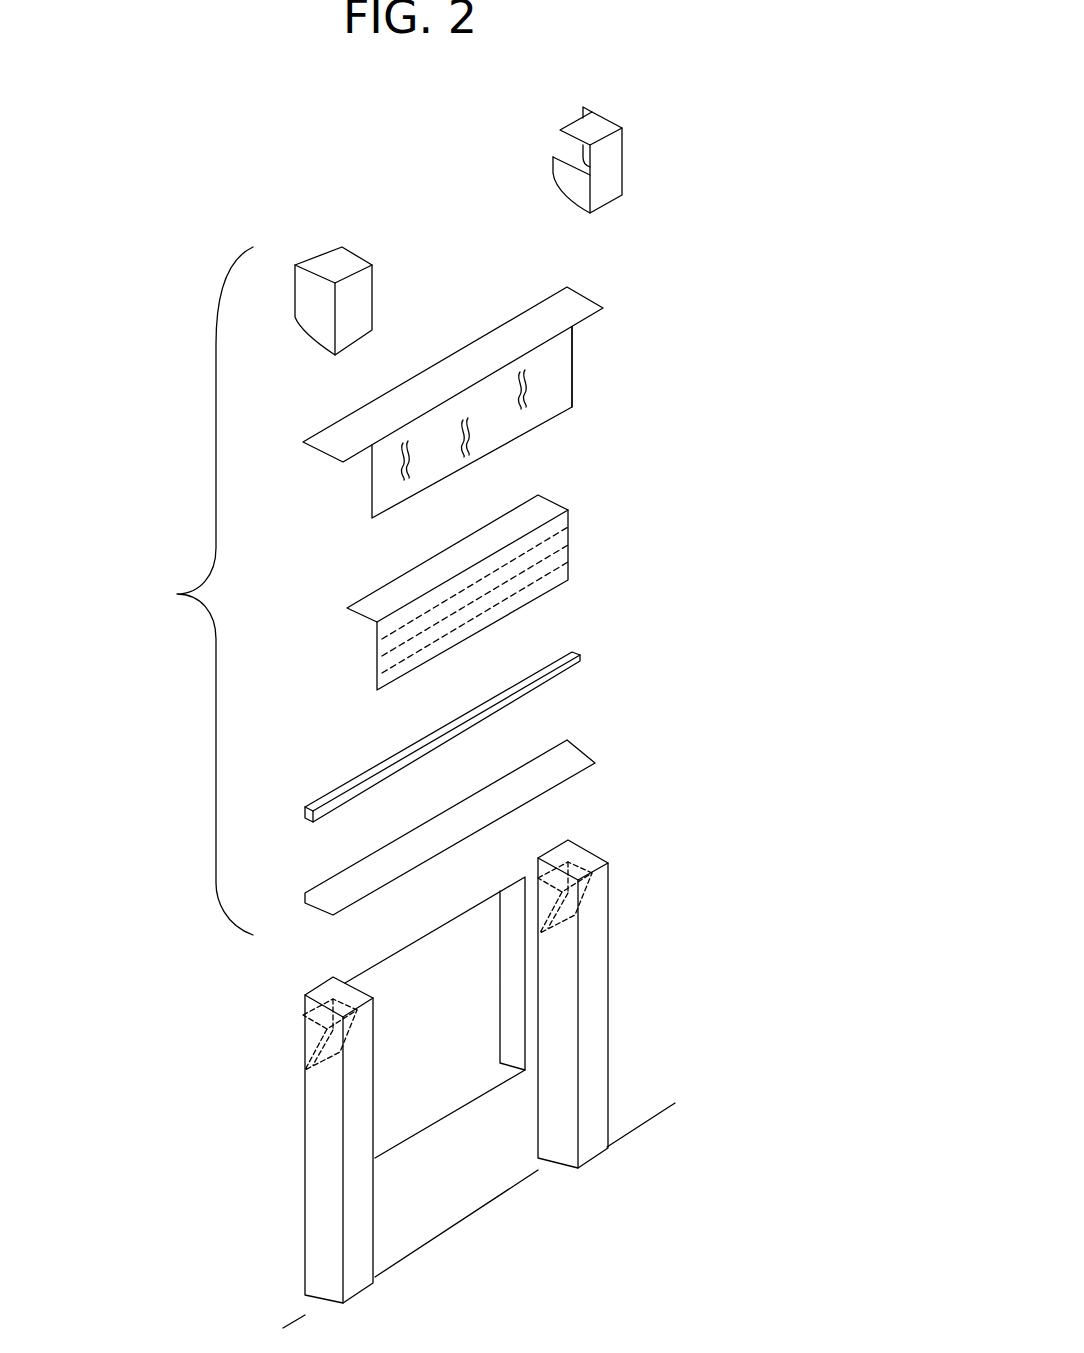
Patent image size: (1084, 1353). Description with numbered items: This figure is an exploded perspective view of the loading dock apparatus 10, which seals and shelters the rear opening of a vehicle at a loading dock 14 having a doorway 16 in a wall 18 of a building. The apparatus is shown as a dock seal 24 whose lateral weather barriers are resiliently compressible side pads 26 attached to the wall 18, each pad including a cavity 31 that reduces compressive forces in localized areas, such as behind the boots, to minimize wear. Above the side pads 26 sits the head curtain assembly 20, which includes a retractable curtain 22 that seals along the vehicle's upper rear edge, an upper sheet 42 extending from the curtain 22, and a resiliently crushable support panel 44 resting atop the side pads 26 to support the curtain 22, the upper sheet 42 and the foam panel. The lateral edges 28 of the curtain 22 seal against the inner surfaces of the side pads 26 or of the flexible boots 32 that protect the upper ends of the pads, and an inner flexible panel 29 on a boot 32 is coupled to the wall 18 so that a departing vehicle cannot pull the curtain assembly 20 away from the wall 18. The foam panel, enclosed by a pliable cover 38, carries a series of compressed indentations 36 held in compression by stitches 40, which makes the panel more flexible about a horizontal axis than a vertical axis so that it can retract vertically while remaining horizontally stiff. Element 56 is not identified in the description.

The loading dock apparatus 10 is at (805, 126).
The loading dock 14 is at (440, 1179).
The doorway 16 is at (417, 990).
The wall 18 is at (628, 1088).
The head curtain assembly 20 is at (177, 594).
The curtain 22 is at (473, 377).
The dock seal 24 is at (805, 249).
The side pads 26 is at (592, 1002).
The lateral edges 28 is at (573, 363).
The inner flexible panel 29 is at (568, 178).
The cavities 31 is at (587, 897).
The flexible boots 32 is at (392, 292).
The compressed indentations 36 is at (478, 615).
The pliable cover 38 is at (550, 568).
The stitches 40 is at (497, 587).
The upper sheet 42 is at (576, 303).
The support panel 44 is at (570, 763).
The bar 56 is at (557, 672).